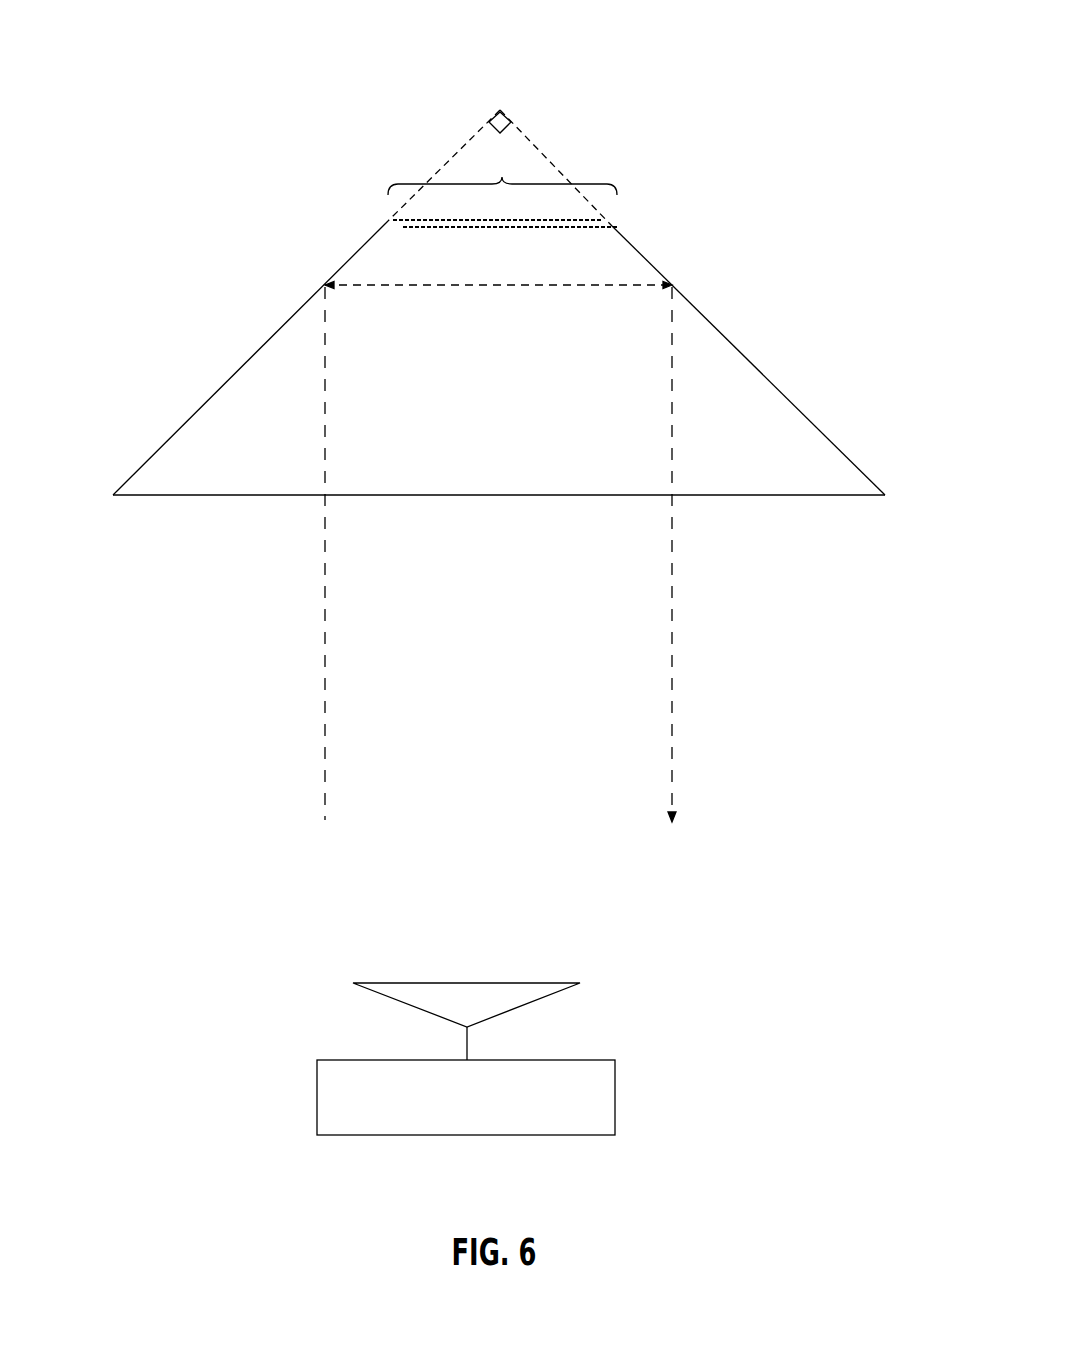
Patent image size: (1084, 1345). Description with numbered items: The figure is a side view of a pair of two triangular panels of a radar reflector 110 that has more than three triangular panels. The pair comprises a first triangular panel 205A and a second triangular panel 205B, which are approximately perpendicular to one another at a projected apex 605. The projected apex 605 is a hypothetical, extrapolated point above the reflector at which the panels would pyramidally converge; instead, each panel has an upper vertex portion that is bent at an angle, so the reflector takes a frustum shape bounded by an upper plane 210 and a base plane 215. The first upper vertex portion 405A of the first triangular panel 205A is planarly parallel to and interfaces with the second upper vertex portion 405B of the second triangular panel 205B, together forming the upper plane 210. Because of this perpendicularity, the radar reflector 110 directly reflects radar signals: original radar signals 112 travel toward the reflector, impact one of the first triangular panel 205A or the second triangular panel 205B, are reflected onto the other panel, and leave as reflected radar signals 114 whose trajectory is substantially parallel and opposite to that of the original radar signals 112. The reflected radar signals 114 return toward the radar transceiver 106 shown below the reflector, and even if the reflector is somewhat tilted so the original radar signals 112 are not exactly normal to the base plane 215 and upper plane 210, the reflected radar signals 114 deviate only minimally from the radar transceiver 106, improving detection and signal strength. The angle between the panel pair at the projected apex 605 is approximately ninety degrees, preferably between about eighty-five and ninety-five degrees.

The radar reflector 110 is at (781, 83).
The projected apex 605 is at (486, 109).
The upper plane 210 is at (502, 177).
The first upper vertex portion 405A is at (410, 219).
The second upper vertex portion 405B is at (441, 231).
The first triangular panel 205A is at (222, 380).
The second triangular panel 205B is at (735, 340).
The base plane 215 is at (190, 507).
The original radar signals 112 is at (338, 675).
The reflected radar signals 114 is at (686, 675).
The radar transceiver 106 is at (626, 1105).